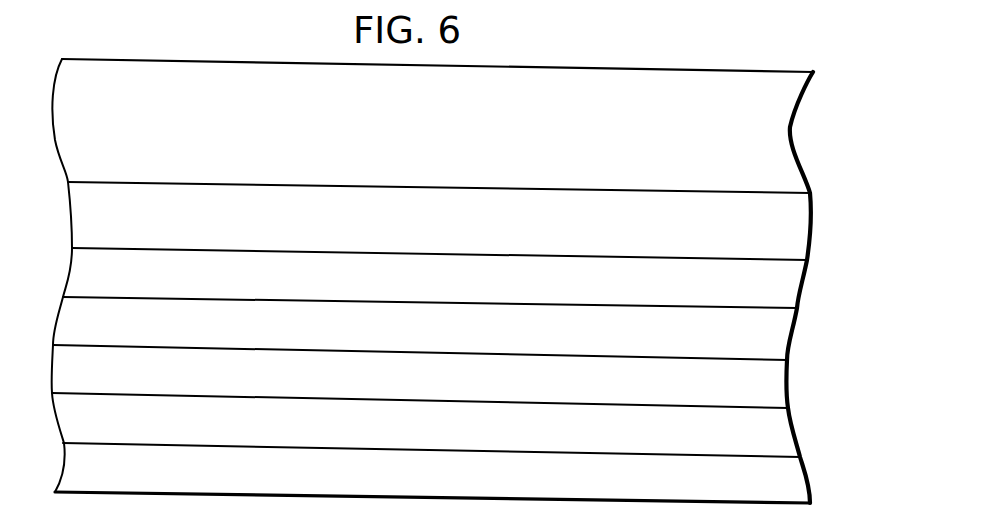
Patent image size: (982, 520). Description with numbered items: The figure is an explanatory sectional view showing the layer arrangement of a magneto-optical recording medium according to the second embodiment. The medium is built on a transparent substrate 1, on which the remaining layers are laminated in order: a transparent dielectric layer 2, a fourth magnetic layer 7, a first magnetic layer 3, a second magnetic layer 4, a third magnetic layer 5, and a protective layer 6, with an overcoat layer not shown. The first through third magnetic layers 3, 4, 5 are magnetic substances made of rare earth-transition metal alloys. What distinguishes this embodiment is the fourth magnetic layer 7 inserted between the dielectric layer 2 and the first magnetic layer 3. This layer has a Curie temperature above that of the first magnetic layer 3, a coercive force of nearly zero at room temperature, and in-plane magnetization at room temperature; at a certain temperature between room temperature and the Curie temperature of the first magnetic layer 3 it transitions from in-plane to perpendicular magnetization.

The transparent substrate 1 is at (783, 158).
The transparent dielectric layer 2 is at (797, 232).
The fourth magnetic layer 7 is at (790, 288).
The first magnetic layer 3 is at (778, 342).
The second magnetic layer 4 is at (775, 390).
The third magnetic layer 5 is at (785, 438).
The protective layer 6 is at (800, 487).